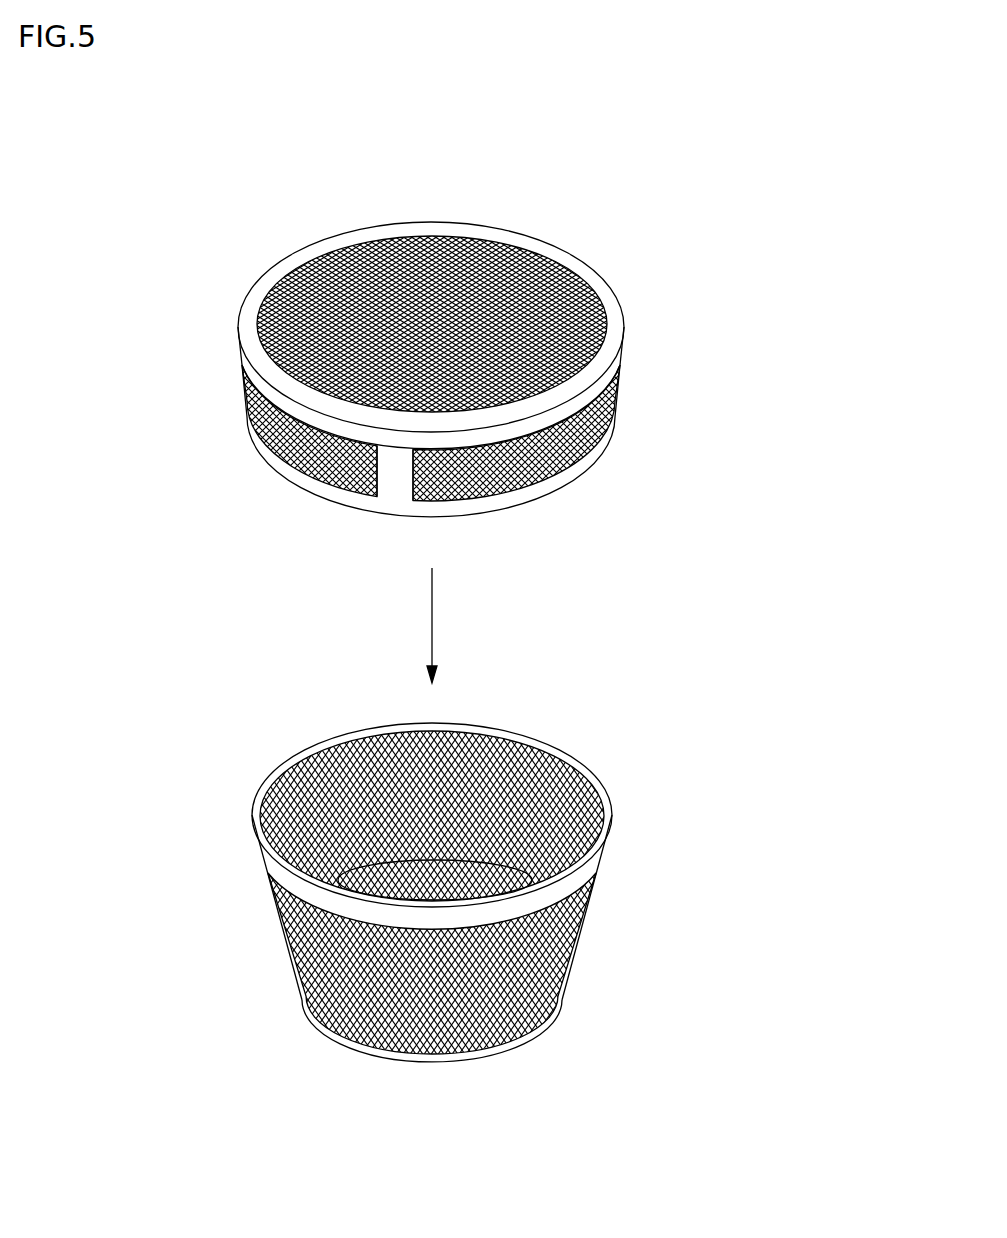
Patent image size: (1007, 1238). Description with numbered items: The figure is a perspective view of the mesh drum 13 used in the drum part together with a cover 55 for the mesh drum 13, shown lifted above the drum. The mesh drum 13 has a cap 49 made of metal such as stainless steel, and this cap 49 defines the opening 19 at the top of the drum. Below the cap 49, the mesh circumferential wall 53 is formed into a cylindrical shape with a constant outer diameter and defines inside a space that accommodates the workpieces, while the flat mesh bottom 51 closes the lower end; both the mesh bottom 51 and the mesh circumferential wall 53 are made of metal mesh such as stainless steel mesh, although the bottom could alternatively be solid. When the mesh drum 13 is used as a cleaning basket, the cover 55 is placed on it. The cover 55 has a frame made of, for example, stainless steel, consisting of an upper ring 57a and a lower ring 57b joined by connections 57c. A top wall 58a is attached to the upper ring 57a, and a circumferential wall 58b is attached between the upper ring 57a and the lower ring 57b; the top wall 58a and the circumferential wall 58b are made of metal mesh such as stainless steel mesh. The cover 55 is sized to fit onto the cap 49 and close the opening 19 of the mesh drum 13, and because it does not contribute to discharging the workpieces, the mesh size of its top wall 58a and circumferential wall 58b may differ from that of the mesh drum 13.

The mesh drum 13 is at (490, 838).
The opening 19 is at (540, 735).
The cap 49 is at (612, 782).
The mesh bottom 51 is at (452, 848).
The mesh circumferential wall 53 is at (583, 943).
The cover 55 is at (507, 339).
The upper ring 57a is at (614, 284).
The lower ring 57b is at (578, 483).
The connections 57c is at (398, 472).
The top wall 58a is at (478, 280).
The circumferential wall 58b is at (613, 413).